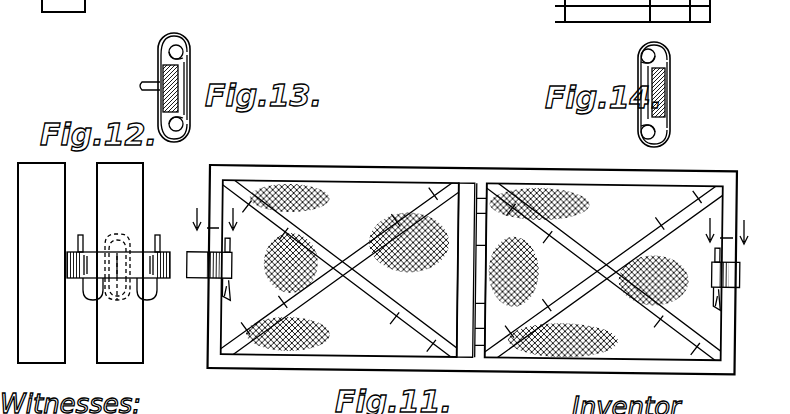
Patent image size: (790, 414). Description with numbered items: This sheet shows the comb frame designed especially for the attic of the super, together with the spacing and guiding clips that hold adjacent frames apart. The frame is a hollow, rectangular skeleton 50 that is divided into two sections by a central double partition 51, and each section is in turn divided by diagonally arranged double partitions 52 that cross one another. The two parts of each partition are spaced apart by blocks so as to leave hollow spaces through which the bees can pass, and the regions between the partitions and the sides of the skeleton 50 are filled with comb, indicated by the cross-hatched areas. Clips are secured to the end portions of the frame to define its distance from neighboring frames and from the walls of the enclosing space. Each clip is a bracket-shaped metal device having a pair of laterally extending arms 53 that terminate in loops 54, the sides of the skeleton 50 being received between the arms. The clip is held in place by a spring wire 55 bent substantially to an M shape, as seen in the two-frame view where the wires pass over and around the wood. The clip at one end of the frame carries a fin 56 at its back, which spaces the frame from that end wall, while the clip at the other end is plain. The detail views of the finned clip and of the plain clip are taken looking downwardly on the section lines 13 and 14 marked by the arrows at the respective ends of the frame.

In FIG. 11, the hollow rectangular skeleton frame 50 is at (388, 174).
In FIG. 12, the hollow rectangular skeleton frame 50 is at (110, 209).
In FIG. 13, the hollow rectangular skeleton frame 50 is at (182, 80).
In FIG. 14, the hollow rectangular skeleton frame 50 is at (658, 92).
In FIG. 11, the double partition 51 is at (466, 357).
In FIG. 11, the diagonally arranged double partitions 52 is at (503, 188).
In FIG. 11, the laterally extending arms 53 is at (463, 270).
In FIG. 12, the laterally extending arms 53 is at (148, 255).
In FIG. 13, the laterally extending arms 53 is at (160, 62).
In FIG. 14, the laterally extending arms 53 is at (672, 108).
In FIG. 13, the loops 54 is at (178, 38).
In FIG. 14, the loops 54 is at (645, 138).
In FIG. 11, the spring wire 55 is at (226, 288).
In FIG. 12, the spring wire 55 is at (150, 295).
In FIG. 13, the spring wire 55 is at (190, 100).
In FIG. 14, the spring wire 55 is at (672, 78).
In FIG. 11, the fin 56 is at (208, 268).
In FIG. 12, the fin 56 is at (118, 282).
In FIG. 13, the fin 56 is at (140, 86).
In FIG. 11, the section line 13— 13 is at (215, 221).
In FIG. 11, the section line 14— 14 is at (729, 234).